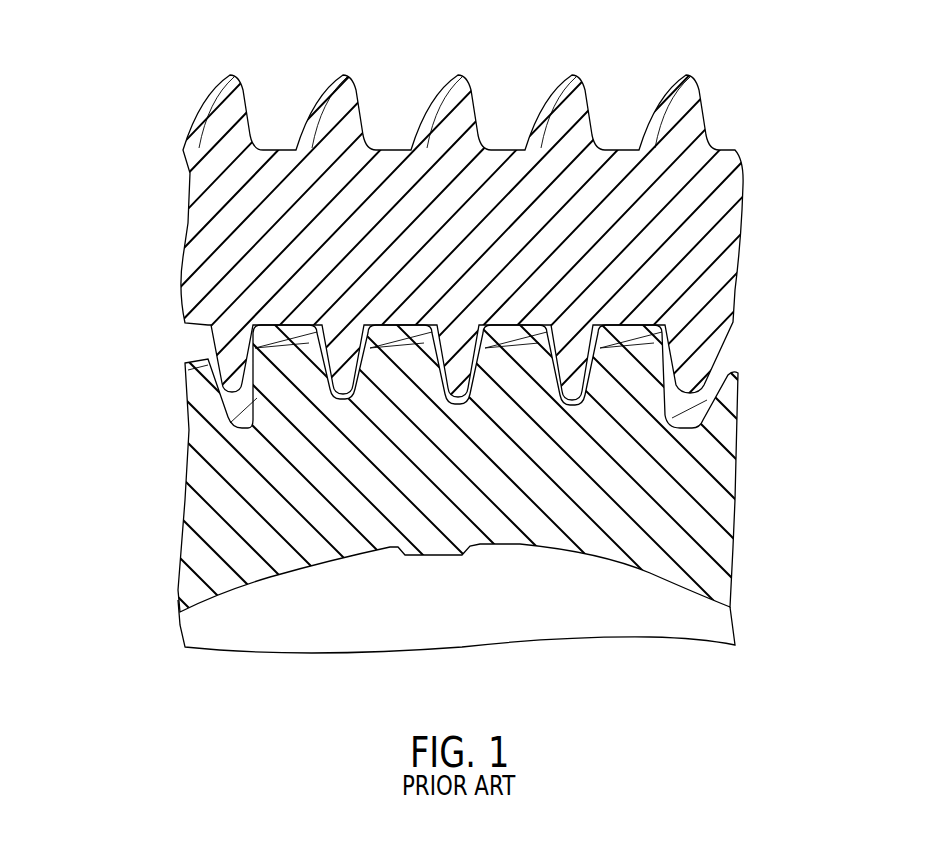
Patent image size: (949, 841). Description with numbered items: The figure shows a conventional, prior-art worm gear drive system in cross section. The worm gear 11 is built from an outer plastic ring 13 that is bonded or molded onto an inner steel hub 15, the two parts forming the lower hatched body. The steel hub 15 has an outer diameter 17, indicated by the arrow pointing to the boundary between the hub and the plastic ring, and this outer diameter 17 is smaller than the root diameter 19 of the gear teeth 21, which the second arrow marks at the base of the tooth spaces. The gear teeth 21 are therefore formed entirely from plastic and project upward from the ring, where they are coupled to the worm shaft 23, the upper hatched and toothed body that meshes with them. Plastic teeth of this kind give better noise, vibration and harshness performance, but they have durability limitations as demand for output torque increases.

The worm gear 11 is at (474, 376).
The outer plastic ring 13 is at (474, 460).
The inner steel hub 15 is at (725, 625).
The outer diameter 17 is at (502, 556).
The root diameter 19 is at (458, 412).
The gear teeth 21 is at (740, 415).
The worm shaft 23 is at (742, 191).